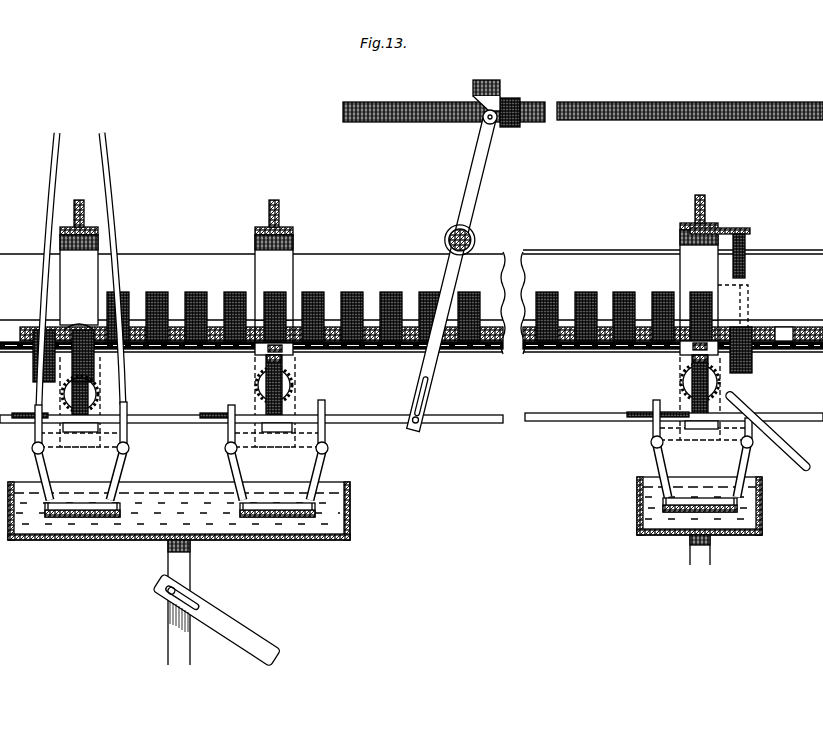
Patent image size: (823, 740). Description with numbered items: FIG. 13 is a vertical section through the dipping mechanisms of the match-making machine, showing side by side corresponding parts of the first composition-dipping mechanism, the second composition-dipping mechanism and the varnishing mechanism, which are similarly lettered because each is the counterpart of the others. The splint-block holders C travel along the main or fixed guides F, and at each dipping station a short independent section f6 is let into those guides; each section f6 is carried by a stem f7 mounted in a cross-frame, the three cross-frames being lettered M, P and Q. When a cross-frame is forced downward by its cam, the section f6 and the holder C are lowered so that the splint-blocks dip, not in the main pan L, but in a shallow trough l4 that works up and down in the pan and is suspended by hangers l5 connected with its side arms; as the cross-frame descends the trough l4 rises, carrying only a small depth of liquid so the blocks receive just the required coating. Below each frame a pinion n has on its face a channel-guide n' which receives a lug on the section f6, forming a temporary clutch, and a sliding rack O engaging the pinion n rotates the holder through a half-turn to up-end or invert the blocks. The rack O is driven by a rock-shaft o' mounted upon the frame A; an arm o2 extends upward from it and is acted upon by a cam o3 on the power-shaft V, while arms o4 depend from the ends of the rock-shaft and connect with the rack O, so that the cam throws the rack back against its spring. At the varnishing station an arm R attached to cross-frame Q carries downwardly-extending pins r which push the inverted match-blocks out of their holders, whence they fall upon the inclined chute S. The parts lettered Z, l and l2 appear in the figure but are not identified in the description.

The frame A is at (374, 268).
The holder C is at (60, 331).
The fixed guides F is at (212, 353).
The third cross-frame M is at (86, 283).
The cross-frame of second dipping mechanism P is at (280, 283).
The cross-frame of varnishing mechanism Q is at (699, 268).
The discharge-arm R is at (739, 228).
The pins r is at (745, 260).
The plates Z is at (168, 298).
The third short independent sections f6 is at (79, 323).
The stems f7 is at (94, 356).
The pinion n is at (400, 387).
The channel-guide n' is at (376, 385).
The sliding rack O is at (30, 417).
The main pan L is at (145, 530).
The shallow trough l4 is at (86, 520).
The hangers l5 is at (102, 159).
The stem l is at (185, 566).
The arm l2 is at (224, 627).
The inclined chute S is at (796, 451).
The power-shaft V is at (573, 108).
The arm o2 is at (473, 184).
The depending arm o4 is at (428, 378).
The rock-shaft o' is at (451, 239).
The cam o3 is at (483, 80).